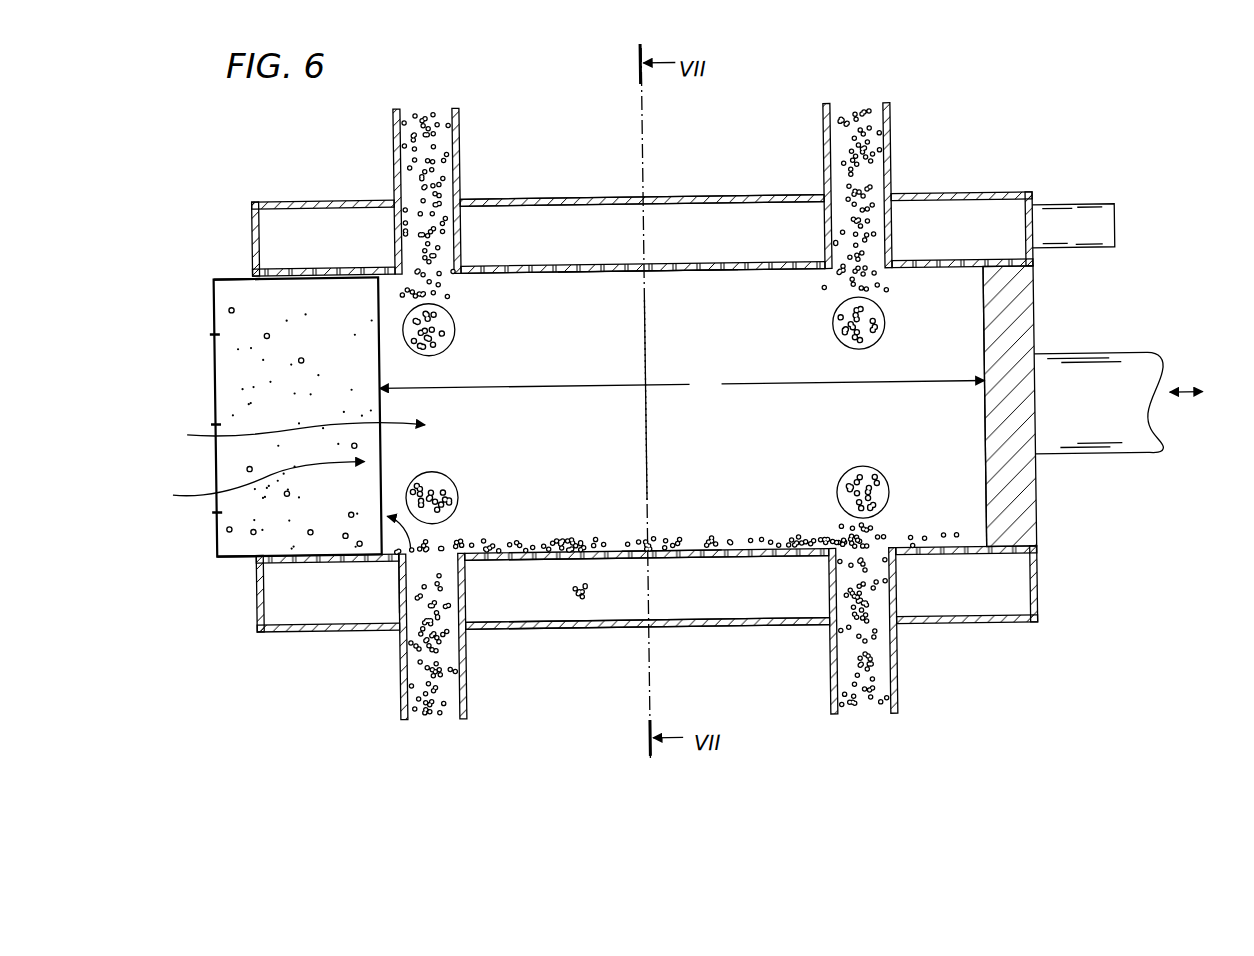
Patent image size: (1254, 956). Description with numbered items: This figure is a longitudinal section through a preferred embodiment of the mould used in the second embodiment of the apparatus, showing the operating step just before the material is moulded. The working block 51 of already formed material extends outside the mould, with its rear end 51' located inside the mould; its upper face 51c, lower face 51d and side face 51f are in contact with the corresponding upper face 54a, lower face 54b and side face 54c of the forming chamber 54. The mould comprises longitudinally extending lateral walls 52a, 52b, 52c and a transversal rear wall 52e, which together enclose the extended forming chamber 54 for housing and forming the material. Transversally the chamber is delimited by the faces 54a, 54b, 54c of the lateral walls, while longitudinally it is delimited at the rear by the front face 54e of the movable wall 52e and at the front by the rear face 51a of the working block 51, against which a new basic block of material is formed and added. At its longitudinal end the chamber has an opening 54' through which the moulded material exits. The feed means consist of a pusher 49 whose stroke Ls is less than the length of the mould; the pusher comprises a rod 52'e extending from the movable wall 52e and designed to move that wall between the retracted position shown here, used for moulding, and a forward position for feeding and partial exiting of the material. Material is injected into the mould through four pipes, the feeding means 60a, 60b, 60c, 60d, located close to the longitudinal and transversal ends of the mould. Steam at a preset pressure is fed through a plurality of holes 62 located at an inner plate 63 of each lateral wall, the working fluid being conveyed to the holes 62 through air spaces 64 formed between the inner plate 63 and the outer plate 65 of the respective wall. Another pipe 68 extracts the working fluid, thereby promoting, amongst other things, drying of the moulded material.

The pusher 49 is at (1121, 333).
The working block 51 is at (179, 383).
The rear end of working block 51' is at (297, 347).
The rear face of working block 51a is at (400, 600).
The upper face of working block 51c is at (232, 270).
The lower face of working block 51d is at (240, 552).
The side face of working block 51f is at (267, 378).
The lateral wall of mould 52a is at (521, 138).
The lateral wall of mould 52b is at (622, 638).
The lateral wall of mould 52c is at (283, 431).
The transversal rear wall 52e is at (1021, 310).
The rod 52'e is at (1099, 428).
The forming chamber 54 is at (680, 244).
The opening 54' is at (250, 486).
The upper face of forming chamber 54a is at (772, 272).
The lower face of forming chamber 54b is at (515, 559).
The side face of forming chamber 54c is at (618, 437).
The front face of movable wall 54e is at (985, 331).
The material feeding means 60a is at (449, 326).
The material feeding means 60b is at (851, 323).
The material feeding means 60c is at (439, 135).
The material feeding means 60d is at (876, 128).
The holes 62 is at (491, 266).
The inner plate 63 is at (608, 270).
The air space 64 is at (615, 220).
The outer plate 65 is at (773, 197).
The extraction pipe 68 is at (1110, 233).